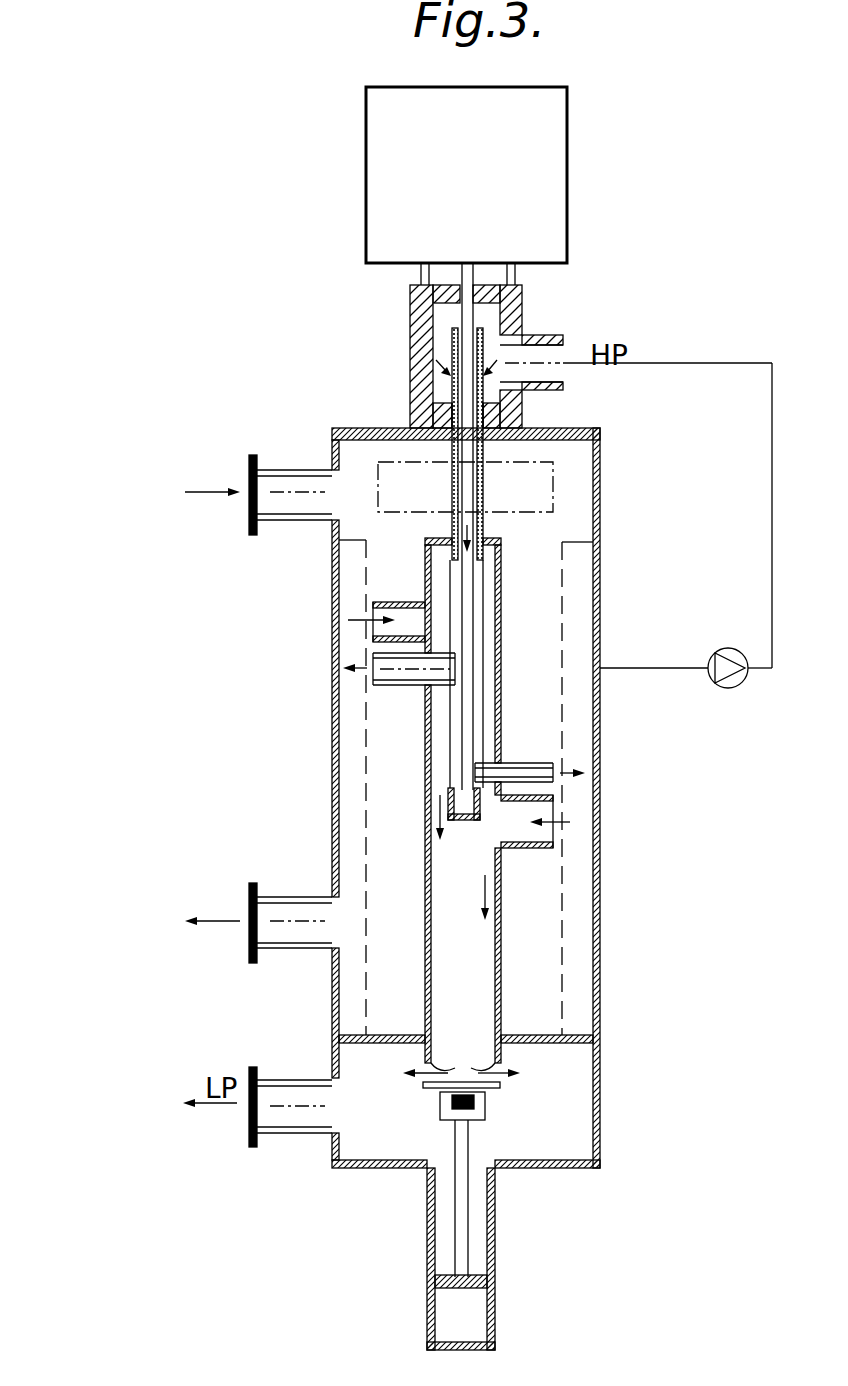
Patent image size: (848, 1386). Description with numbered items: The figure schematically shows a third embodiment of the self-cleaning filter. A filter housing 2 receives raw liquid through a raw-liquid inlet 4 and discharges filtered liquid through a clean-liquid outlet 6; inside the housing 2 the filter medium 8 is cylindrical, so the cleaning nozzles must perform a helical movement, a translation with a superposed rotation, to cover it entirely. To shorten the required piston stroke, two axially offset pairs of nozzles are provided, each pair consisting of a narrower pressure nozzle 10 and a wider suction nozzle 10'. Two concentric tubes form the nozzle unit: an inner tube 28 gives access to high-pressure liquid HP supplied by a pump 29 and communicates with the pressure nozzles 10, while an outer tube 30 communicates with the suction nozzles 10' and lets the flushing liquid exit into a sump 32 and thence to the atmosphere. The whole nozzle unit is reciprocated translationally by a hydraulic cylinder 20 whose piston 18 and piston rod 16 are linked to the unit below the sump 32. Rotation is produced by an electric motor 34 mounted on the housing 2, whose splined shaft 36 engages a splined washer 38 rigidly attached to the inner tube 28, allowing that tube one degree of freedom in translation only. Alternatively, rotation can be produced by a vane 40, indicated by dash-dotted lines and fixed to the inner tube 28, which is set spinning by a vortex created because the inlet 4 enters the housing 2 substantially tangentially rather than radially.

The filter housing 2 is at (330, 737).
The raw-liquid inlet 4 is at (289, 485).
The clean-liquid outlet 6 is at (292, 932).
The filter medium 8 is at (364, 780).
The pressure nozzle 10 is at (430, 702).
The suction nozzle 10' is at (470, 731).
The piston rod 16 is at (460, 1245).
The piston 18 is at (450, 1285).
The hydraulic cylinder 20 is at (495, 1207).
The inner tube 28 is at (478, 520).
The pump 29 is at (730, 690).
The outer tube 30 is at (427, 905).
The sump 32 is at (402, 1128).
The electric motor 34 is at (545, 154).
The splined shaft 36 is at (467, 425).
The splined washer 38 is at (452, 326).
The vane 40 is at (390, 460).